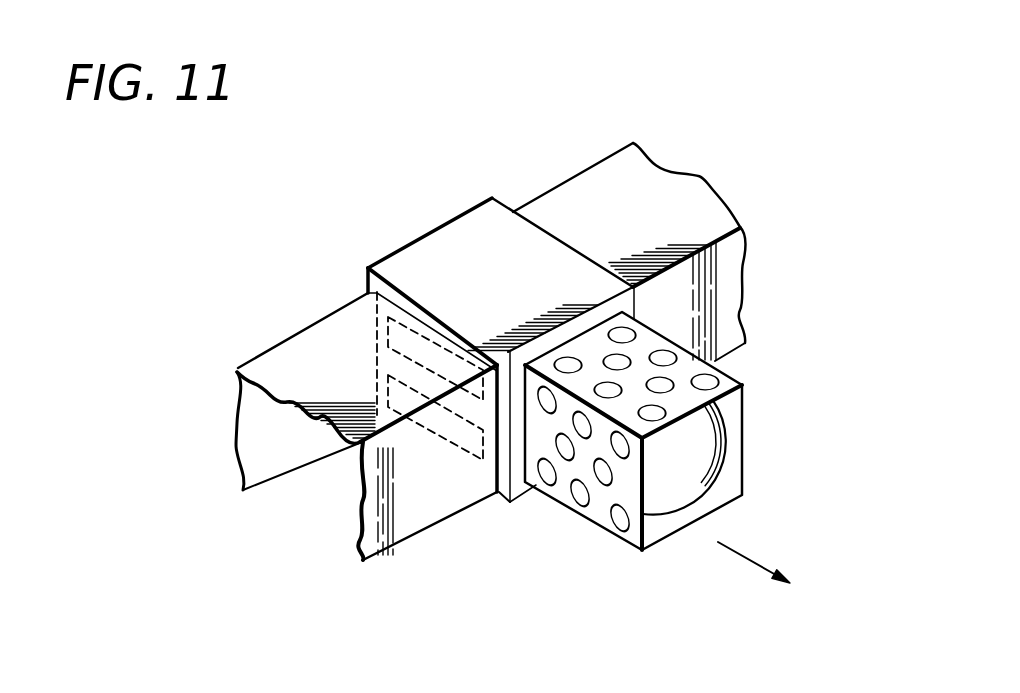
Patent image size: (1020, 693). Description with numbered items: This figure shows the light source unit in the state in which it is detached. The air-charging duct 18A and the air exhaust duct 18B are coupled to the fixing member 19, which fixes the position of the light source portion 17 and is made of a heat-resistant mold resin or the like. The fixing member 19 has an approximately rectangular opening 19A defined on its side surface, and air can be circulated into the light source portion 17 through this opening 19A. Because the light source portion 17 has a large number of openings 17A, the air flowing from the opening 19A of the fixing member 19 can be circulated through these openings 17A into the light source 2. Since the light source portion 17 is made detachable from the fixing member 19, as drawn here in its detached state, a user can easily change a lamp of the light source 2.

The light source 2 is at (713, 453).
The light source portion 17 is at (727, 377).
The openings 17A is at (580, 497).
The air-charging duct 18A is at (403, 508).
The air exhaust duct 18B is at (723, 268).
The fixing member 19 is at (450, 252).
The opening 19A is at (387, 397).